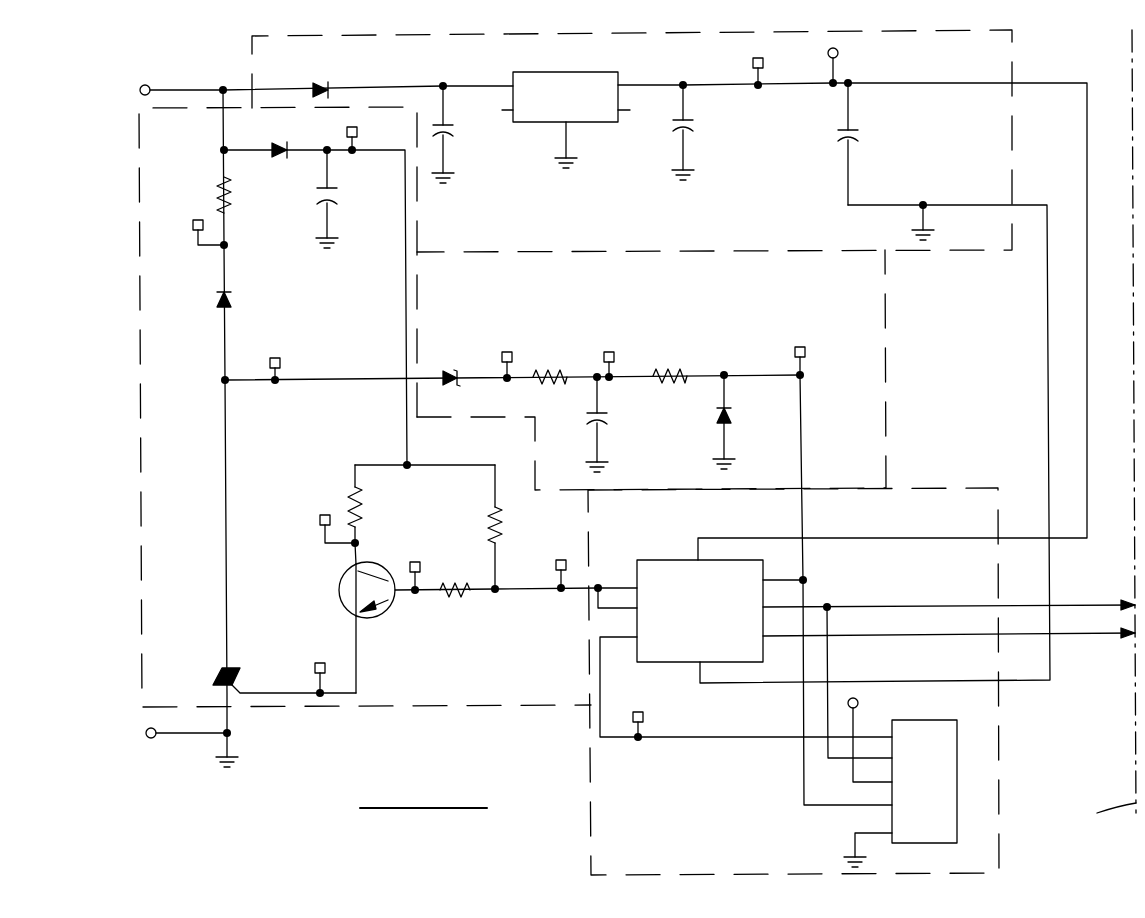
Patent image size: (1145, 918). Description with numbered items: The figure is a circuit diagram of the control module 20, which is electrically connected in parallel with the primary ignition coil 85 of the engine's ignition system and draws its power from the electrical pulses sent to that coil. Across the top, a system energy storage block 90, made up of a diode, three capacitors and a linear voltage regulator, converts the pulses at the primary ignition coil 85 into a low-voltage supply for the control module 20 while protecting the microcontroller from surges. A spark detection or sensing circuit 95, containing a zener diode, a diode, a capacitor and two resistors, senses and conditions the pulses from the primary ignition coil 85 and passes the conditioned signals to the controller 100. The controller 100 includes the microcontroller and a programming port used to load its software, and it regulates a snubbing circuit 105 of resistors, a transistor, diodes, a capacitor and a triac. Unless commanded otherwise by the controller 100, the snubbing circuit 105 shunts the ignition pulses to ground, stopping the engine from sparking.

The control module 20 is at (957, 348).
The primary ignition coil 85 is at (160, 416).
The system energy storage block 90 is at (963, 252).
The spark detection or sensing circuit 95 is at (886, 393).
The controller 100 is at (861, 625).
The snubbing circuit 105 is at (139, 417).